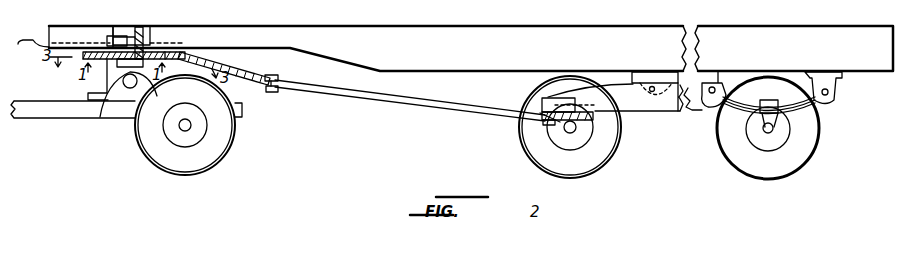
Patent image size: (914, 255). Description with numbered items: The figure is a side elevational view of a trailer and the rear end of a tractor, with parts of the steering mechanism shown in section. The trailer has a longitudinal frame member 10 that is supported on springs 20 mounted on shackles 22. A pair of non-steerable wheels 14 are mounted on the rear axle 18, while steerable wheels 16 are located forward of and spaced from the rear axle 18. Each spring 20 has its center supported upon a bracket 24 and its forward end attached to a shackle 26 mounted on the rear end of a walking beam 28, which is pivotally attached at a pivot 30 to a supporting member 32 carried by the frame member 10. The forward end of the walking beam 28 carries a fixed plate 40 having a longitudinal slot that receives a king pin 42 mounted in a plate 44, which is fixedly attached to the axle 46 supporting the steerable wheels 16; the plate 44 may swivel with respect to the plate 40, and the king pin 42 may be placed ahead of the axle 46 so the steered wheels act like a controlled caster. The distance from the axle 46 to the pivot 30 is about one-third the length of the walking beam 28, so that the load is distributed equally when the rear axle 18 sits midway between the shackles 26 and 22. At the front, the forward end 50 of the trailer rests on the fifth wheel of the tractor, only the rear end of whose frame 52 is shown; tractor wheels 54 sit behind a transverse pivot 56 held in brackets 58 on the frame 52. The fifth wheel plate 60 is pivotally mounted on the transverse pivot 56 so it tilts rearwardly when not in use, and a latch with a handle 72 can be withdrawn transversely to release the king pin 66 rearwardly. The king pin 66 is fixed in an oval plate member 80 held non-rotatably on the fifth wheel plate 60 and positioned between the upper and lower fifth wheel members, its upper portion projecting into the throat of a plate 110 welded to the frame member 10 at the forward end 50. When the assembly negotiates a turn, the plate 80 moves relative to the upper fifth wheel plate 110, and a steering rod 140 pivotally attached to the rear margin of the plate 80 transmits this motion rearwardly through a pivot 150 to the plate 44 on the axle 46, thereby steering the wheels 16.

The longitudinal frame member 10 is at (790, 38).
The non-steerable wheel 14 is at (788, 155).
The steerable wheel 16 is at (583, 160).
The rear axle 18 is at (775, 131).
The spring 20 is at (828, 108).
The shackle 22 is at (832, 82).
The bracket 24 is at (763, 118).
The shackle 26 is at (723, 86).
The walking beam 28 is at (663, 104).
The pivot 30 is at (653, 92).
The supporting member 32 is at (643, 75).
The plate 40 is at (575, 110).
The king pin 42 is at (558, 112).
The plate 44 is at (592, 120).
The axle 46 is at (570, 128).
The forward end of the trailer 50 is at (72, 33).
The tractor frame 52 is at (75, 110).
The tractor wheel 54 is at (220, 143).
The transverse pivot 56 is at (130, 88).
The bracket 58 is at (88, 97).
The fifth wheel plate 60 is at (107, 60).
The king pin 66 is at (132, 34).
The handle 72 is at (144, 62).
The plate member 80 is at (233, 67).
The plate 110 is at (24, 50).
The steering rod 140 is at (403, 103).
The pivot 150 is at (543, 115).